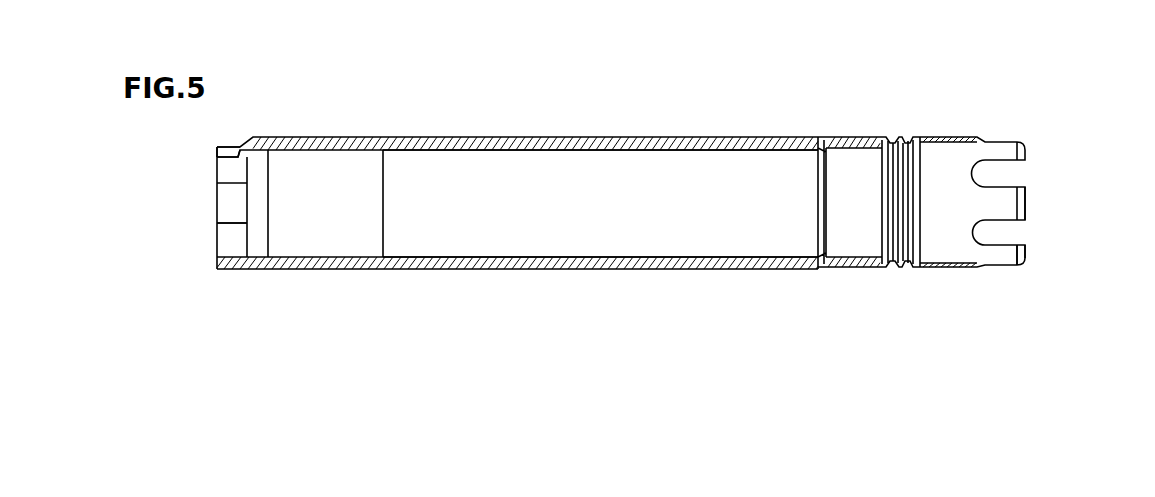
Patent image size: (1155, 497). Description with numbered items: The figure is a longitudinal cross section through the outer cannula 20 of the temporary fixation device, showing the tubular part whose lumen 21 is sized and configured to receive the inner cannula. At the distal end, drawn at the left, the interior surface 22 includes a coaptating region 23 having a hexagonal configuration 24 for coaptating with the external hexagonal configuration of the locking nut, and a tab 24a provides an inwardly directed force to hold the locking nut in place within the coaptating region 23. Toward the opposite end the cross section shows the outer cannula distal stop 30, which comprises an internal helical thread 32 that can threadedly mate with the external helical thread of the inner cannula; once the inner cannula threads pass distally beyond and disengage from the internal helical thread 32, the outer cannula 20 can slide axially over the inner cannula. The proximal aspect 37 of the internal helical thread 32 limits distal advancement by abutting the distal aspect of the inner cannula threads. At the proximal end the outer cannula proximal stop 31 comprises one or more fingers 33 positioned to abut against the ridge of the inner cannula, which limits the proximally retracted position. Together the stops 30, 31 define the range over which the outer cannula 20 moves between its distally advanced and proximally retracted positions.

The outer cannula 20 is at (636, 129).
The lumen 21 is at (478, 232).
The interior surface 22 is at (625, 235).
The coaptating region 23 is at (228, 237).
The hexagonal configuration 24 is at (228, 202).
The tab 24a is at (222, 146).
The outer cannula distal stop 30 is at (870, 207).
The outer cannula proximal stop 31 is at (1020, 205).
The internal helical thread 32 is at (898, 258).
The fingers 33 is at (1025, 262).
The proximal aspect 37 is at (883, 252).